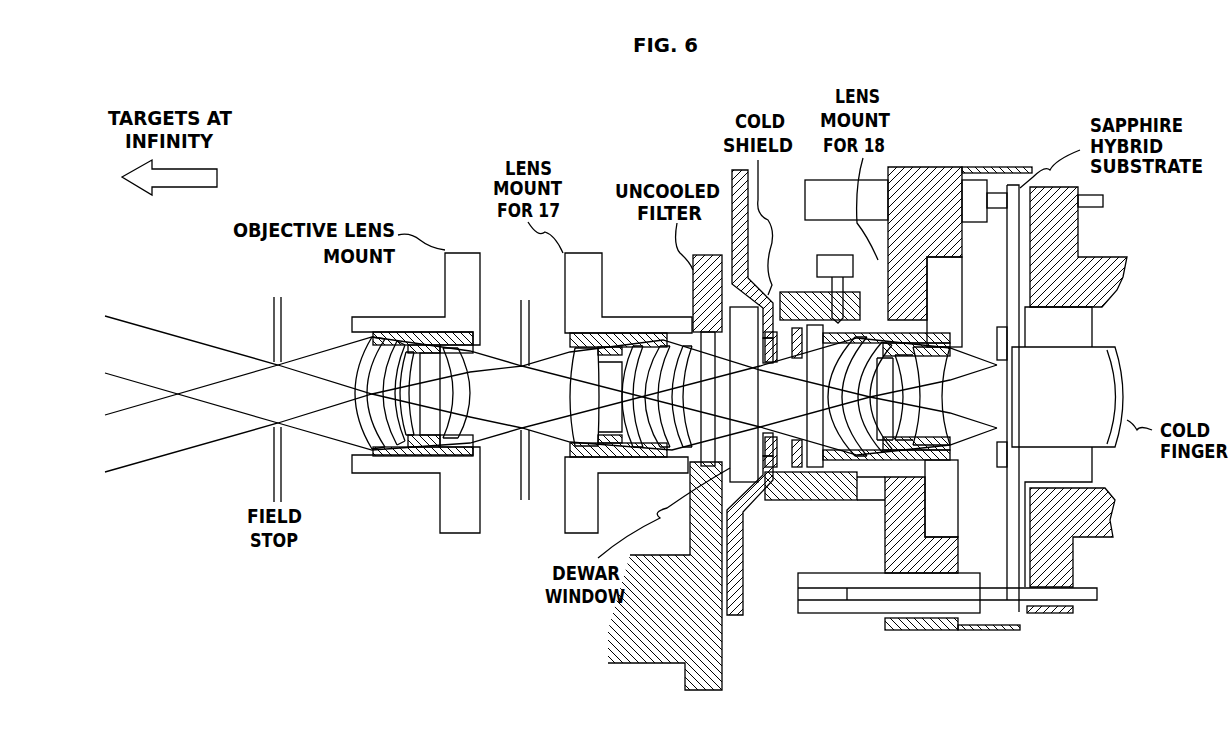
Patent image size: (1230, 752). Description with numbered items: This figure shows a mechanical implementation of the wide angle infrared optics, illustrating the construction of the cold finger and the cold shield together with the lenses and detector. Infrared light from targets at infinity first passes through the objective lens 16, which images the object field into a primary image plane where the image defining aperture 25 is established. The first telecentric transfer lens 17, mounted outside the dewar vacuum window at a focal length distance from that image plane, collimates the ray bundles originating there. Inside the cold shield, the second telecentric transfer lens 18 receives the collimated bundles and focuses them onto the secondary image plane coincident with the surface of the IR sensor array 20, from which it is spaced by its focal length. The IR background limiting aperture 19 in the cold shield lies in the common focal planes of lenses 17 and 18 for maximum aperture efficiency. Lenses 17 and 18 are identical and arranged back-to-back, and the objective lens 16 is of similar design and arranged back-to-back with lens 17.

The objective lens 16 is at (435, 358).
The first telecentric transfer lens 17 is at (612, 360).
The second telecentric transfer lens 18 is at (903, 433).
The IR background limiting aperture 19 is at (773, 470).
The IR sensor array 20 is at (993, 413).
The image defining aperture 25 is at (518, 507).